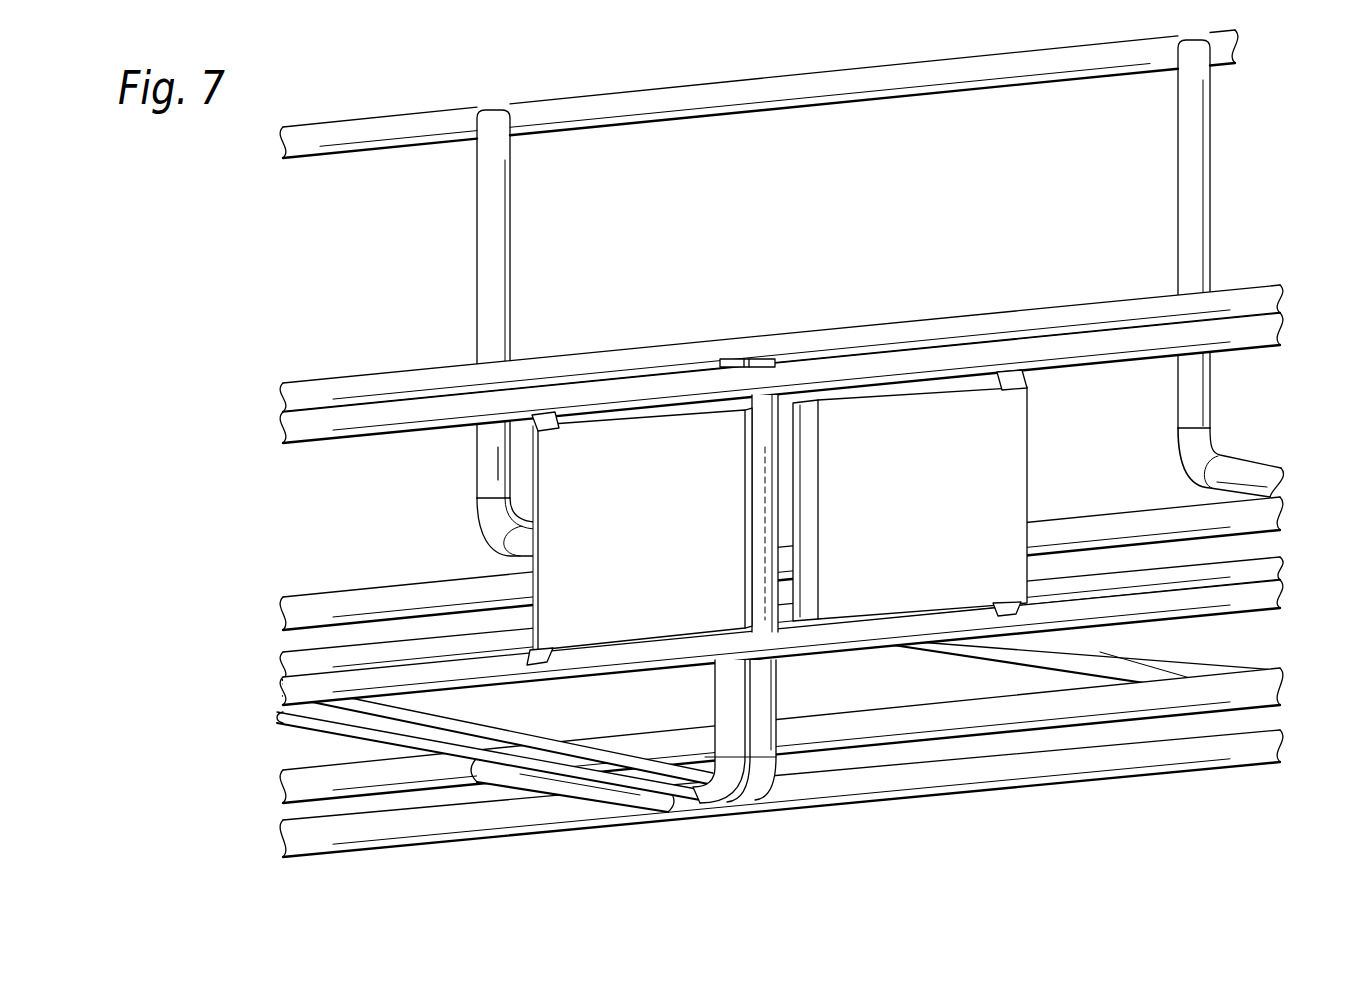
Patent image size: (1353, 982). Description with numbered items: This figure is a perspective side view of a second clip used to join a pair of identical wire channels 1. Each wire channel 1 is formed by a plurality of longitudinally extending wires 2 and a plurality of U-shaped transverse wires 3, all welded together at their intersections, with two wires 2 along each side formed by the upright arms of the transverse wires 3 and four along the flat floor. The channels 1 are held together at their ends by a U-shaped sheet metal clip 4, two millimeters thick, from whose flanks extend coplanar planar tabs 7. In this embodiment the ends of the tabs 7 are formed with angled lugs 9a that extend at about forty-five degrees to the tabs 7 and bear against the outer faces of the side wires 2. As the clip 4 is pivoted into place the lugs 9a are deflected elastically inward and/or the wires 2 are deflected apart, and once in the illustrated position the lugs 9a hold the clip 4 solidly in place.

The wire channel 1 is at (240, 797).
The longitudinally extending wire 2 is at (290, 432).
The U-shaped transverse wire 3 is at (733, 362).
The sheet metal clip 4 is at (784, 420).
The planar tab 7 is at (560, 468).
The angled lug 9a is at (540, 417).